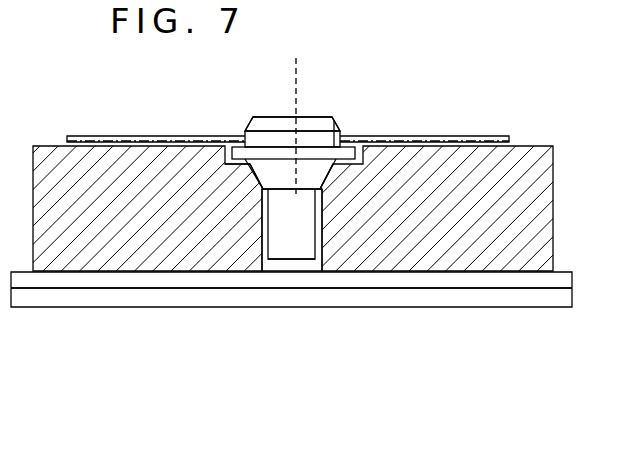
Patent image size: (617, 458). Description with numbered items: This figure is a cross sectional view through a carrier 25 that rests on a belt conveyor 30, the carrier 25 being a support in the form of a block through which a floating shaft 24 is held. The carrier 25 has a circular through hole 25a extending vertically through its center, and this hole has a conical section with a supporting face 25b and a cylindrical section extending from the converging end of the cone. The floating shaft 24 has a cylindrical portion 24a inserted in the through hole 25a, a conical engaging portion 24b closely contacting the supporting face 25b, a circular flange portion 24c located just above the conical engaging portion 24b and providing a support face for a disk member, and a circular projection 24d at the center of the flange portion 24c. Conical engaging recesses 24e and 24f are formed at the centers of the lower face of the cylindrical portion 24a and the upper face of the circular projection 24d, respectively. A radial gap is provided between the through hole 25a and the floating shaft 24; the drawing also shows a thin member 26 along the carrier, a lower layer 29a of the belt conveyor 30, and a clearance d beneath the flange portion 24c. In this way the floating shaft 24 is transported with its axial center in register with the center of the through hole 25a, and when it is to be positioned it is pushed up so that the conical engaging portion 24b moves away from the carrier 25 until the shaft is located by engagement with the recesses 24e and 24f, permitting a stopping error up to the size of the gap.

The floating shaft 24 is at (330, 150).
The cylindrical portion 24a is at (283, 238).
The conical engaging portion 24b is at (262, 187).
The circular flange portion 24c is at (267, 176).
The circular projection 24d is at (322, 118).
The conical engaging recess 24e is at (292, 242).
The conical engaging recess 24f is at (303, 114).
The carrier 25 is at (525, 157).
The through hole 25a is at (322, 231).
The supporting face 25b is at (256, 177).
The thin panel 26 is at (140, 135).
The lower layer of base 29a is at (557, 297).
The belt conveyor 30 is at (560, 282).
The clearance gap d is at (238, 148).